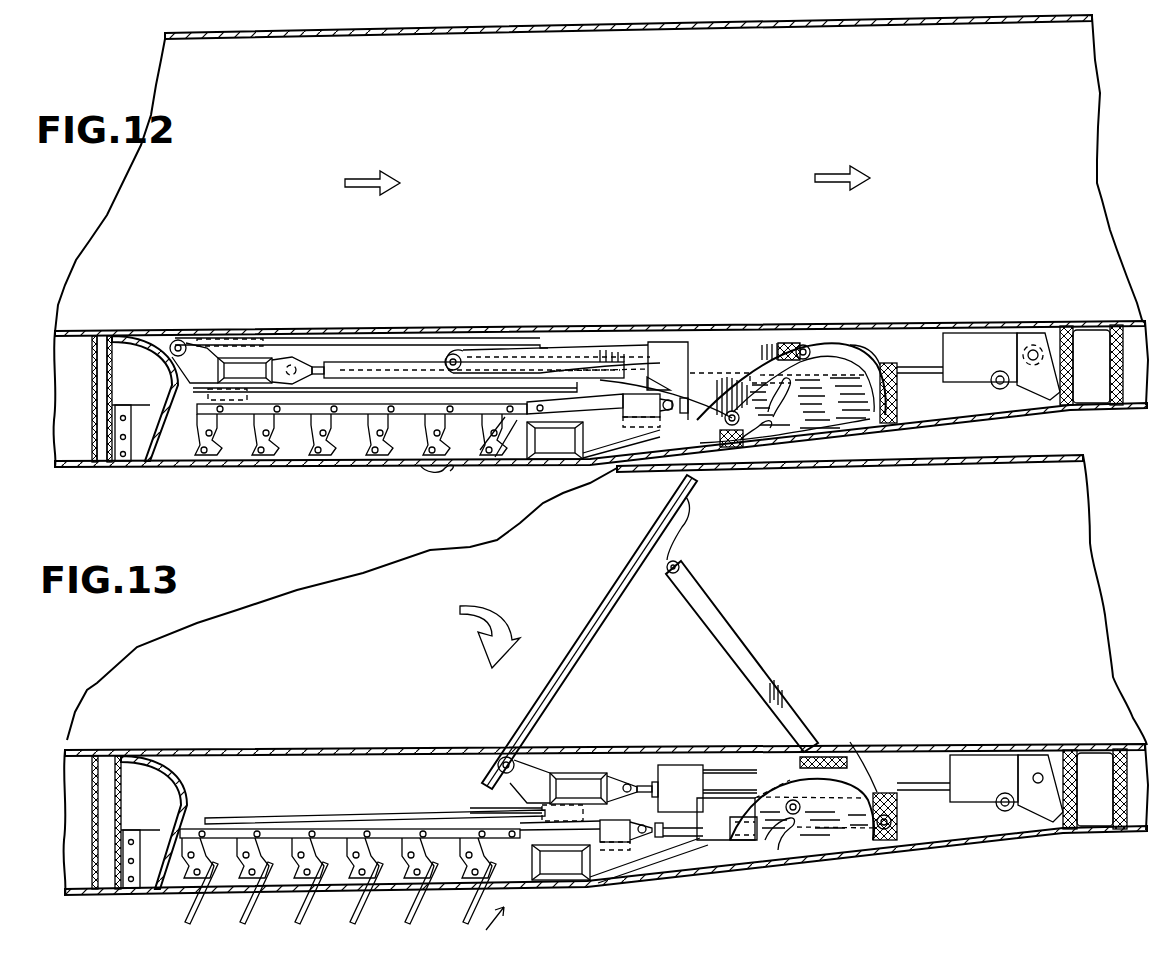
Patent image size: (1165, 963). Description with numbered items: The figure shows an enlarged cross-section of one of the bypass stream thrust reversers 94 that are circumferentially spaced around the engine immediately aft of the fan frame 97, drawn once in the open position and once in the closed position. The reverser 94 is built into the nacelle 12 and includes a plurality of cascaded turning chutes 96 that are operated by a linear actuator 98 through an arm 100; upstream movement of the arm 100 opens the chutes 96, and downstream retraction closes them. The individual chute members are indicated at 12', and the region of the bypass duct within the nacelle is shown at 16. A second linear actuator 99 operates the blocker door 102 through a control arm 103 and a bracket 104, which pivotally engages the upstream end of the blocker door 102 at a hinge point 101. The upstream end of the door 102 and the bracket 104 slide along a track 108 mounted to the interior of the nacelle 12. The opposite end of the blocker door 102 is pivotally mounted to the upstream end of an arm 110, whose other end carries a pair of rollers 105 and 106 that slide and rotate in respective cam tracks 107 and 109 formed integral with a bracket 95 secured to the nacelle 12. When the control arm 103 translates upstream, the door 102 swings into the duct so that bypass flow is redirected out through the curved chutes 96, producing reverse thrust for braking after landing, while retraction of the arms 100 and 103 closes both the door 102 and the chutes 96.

In FIG. 12, the nacelle 12 is at (121, 449).
In FIG. 13, the nacelle 12 is at (128, 874).
In FIG. 12, the lug brackets 12' is at (351, 454).
In FIG. 13, the lug brackets 12' is at (337, 878).
In FIG. 12, the hood / cover 16 is at (610, 219).
In FIG. 13, the hood / cover 16 is at (880, 603).
In FIG. 12, the bypass stream thrust reverser 94 is at (231, 481).
In FIG. 13, the bypass stream thrust reverser 94 is at (275, 926).
In FIG. 12, the bracket 95 is at (846, 420).
In FIG. 13, the bracket 95 is at (840, 843).
In FIG. 12, the cascaded turning chutes 96 is at (403, 470).
In FIG. 13, the cascaded turning chutes 96 is at (240, 905).
In FIG. 12, the fan frame 97 is at (115, 332).
In FIG. 13, the fan frame 97 is at (130, 758).
In FIG. 12, the linear actuator 98 is at (700, 419).
In FIG. 13, the linear actuator 98 is at (702, 838).
In FIG. 12, the second linear actuator 99 is at (980, 338).
In FIG. 13, the second linear actuator 99 is at (980, 760).
In FIG. 12, the arm 100 is at (542, 398).
In FIG. 13, the arm 100 is at (497, 818).
In FIG. 12, the hinge point 101 is at (186, 340).
In FIG. 13, the hinge point 101 is at (497, 758).
In FIG. 12, the blocker door 102 is at (452, 330).
In FIG. 13, the blocker door 102 is at (620, 583).
In FIG. 12, the control arm 103 is at (330, 358).
In FIG. 13, the control arm 103 is at (655, 765).
In FIG. 12, the bracket 104 is at (270, 352).
In FIG. 13, the bracket 104 is at (590, 773).
In FIG. 12, the roller 105 is at (797, 440).
In FIG. 13, the roller 105 is at (805, 808).
In FIG. 12, the roller 106 is at (806, 344).
In FIG. 13, the roller 106 is at (882, 840).
In FIG. 12, the cam track 107 is at (815, 396).
In FIG. 13, the cam track 107 is at (790, 848).
In FIG. 13, the track 108 is at (338, 806).
In FIG. 12, the cam track 109 is at (878, 350).
In FIG. 13, the cam track 109 is at (862, 770).
In FIG. 12, the arm 110 is at (725, 357).
In FIG. 13, the arm 110 is at (765, 678).